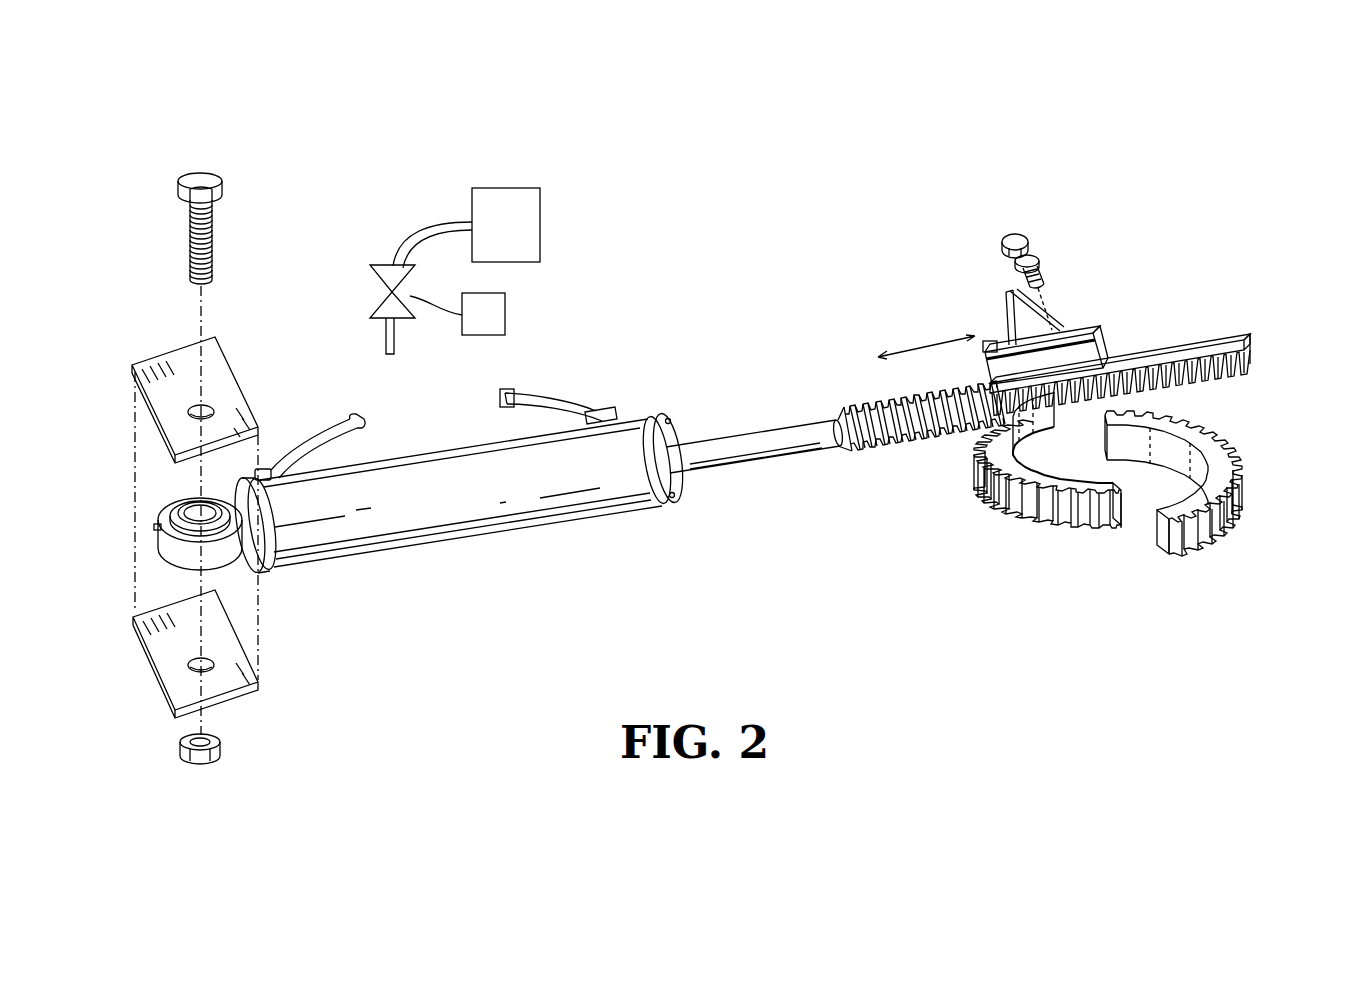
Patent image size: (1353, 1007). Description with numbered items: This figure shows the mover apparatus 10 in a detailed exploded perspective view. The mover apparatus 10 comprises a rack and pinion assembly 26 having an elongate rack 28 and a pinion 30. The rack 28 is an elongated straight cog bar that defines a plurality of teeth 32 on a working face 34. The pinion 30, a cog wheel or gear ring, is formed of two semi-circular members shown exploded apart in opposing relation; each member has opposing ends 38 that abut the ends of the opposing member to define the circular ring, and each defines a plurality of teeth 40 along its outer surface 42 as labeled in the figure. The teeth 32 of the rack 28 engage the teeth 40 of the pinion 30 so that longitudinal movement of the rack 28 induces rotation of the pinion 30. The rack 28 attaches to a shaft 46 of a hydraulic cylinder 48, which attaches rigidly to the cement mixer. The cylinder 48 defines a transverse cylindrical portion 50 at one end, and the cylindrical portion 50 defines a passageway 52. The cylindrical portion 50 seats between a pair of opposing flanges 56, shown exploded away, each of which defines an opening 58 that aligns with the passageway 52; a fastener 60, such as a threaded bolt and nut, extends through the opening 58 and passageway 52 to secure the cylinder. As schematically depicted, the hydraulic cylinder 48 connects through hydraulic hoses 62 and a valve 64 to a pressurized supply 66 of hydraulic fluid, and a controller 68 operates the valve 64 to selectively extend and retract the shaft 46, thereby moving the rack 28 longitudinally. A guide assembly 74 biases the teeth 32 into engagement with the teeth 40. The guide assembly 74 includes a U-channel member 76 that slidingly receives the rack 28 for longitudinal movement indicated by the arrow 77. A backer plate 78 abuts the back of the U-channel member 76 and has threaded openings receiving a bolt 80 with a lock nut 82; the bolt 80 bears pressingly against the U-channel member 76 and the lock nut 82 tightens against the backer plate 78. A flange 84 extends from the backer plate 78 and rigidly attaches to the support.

The mover apparatus 10 is at (752, 325).
The rack and pinion assembly 26 is at (1124, 421).
The rack 28 is at (905, 400).
The pinion 30 is at (1103, 421).
The teeth 32 is at (1240, 380).
The working face 34 is at (1247, 347).
The opposing ends 38 is at (985, 447).
The teeth 40 is at (1105, 440).
The outer surface of gear half 42 is at (1035, 515).
The shaft 46 is at (750, 447).
The hydraulic cylinder 48 is at (470, 515).
The cylindrical portion 50 is at (165, 487).
The passageway 52 is at (185, 514).
The flanges 56 is at (168, 360).
The opening 58 is at (205, 410).
The fastener 60 is at (212, 228).
The hydraulic hoses 62 is at (470, 420).
The valve 64 is at (372, 282).
The pressurized supply 66 is at (541, 224).
The controller 68 is at (505, 308).
The guide assembly 74 is at (926, 283).
The U-channel member 76 is at (1062, 304).
The arrow 77 is at (878, 355).
The backer plate 78 is at (1075, 330).
The bolt 80 is at (994, 242).
The lock nut 82 is at (1040, 266).
The flange 84 is at (1010, 302).